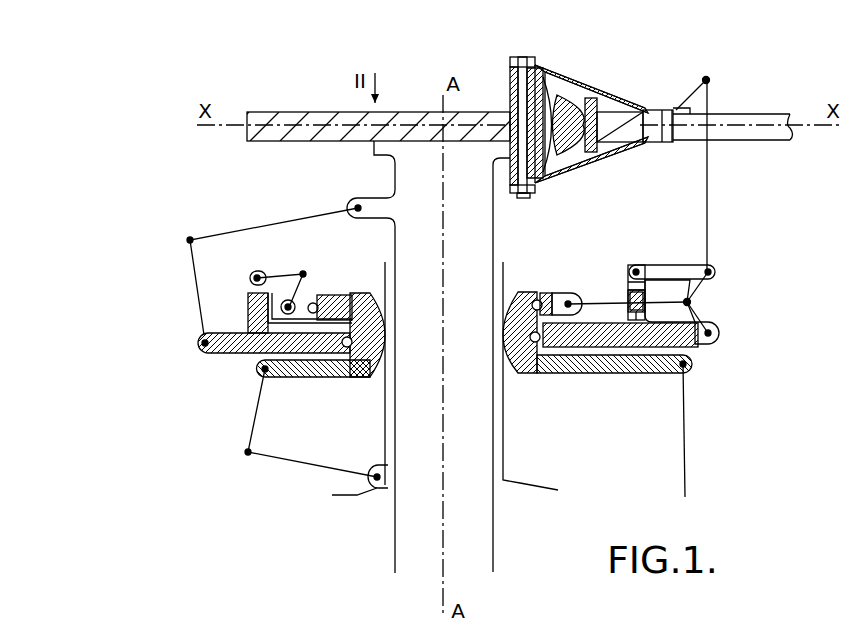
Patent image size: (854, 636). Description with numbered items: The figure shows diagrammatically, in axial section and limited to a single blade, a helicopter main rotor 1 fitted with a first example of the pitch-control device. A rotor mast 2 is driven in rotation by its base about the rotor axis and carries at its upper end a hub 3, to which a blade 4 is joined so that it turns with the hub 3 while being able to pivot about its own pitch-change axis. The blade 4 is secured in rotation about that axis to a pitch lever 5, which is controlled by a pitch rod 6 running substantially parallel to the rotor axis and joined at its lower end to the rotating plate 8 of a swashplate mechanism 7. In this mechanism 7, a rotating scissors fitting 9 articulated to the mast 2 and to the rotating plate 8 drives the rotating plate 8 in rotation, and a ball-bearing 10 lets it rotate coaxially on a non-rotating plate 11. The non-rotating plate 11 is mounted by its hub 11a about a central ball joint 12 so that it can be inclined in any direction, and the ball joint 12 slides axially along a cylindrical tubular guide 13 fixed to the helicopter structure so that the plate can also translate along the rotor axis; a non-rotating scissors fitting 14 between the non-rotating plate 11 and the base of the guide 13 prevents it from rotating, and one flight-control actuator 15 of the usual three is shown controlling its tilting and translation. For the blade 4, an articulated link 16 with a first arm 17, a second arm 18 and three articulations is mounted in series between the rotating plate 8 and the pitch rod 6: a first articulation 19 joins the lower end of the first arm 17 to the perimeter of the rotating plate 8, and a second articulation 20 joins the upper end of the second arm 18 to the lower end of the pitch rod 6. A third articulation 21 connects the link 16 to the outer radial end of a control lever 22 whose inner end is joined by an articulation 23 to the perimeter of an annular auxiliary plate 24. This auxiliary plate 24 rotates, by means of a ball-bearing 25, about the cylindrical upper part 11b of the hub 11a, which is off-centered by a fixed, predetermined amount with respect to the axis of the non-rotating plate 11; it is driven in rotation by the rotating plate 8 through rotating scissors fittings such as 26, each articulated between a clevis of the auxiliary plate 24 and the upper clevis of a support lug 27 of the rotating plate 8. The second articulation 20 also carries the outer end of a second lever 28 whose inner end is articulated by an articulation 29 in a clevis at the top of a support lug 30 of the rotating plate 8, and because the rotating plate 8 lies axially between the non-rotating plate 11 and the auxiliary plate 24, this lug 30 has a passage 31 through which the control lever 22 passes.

The helicopter main rotor 1 is at (180, 112).
The rotor mast 2 is at (477, 547).
The hub 3 is at (397, 118).
The blade 4 is at (748, 120).
The pitch lever 5 is at (690, 95).
The pitch rod 6 is at (708, 185).
The swashplate mechanism 7 is at (244, 384).
The rotating plate 8 is at (220, 352).
The rotating scissors fitting 9 is at (235, 232).
The ball-bearing 10 is at (352, 342).
The non-rotating plate 11 is at (303, 365).
The hub of the non-rotating plate 11a is at (340, 298).
The upper part of the hub 11b is at (313, 303).
The central ball joint 12 is at (378, 367).
The cylindrical tubular guide 13 is at (503, 442).
The non-rotating scissors fitting 14 is at (273, 458).
The flight-control actuator 15 is at (686, 465).
The articulated link 16 is at (739, 285).
The first arm 17 is at (714, 325).
The second arm 18 is at (700, 290).
The first articulation 19 is at (705, 345).
The second articulation 20 is at (712, 268).
The third articulation 21 is at (692, 303).
The control lever 22 is at (603, 300).
The articulation 23 is at (570, 295).
The auxiliary plate 24 is at (547, 293).
The ball-bearing 25 is at (537, 297).
The rotating scissors fitting 26 is at (283, 278).
The support lug 27 is at (250, 305).
The second lever 28 is at (672, 266).
The articulation 29 is at (636, 265).
The support lug 30 is at (640, 297).
The passage 31 is at (640, 318).